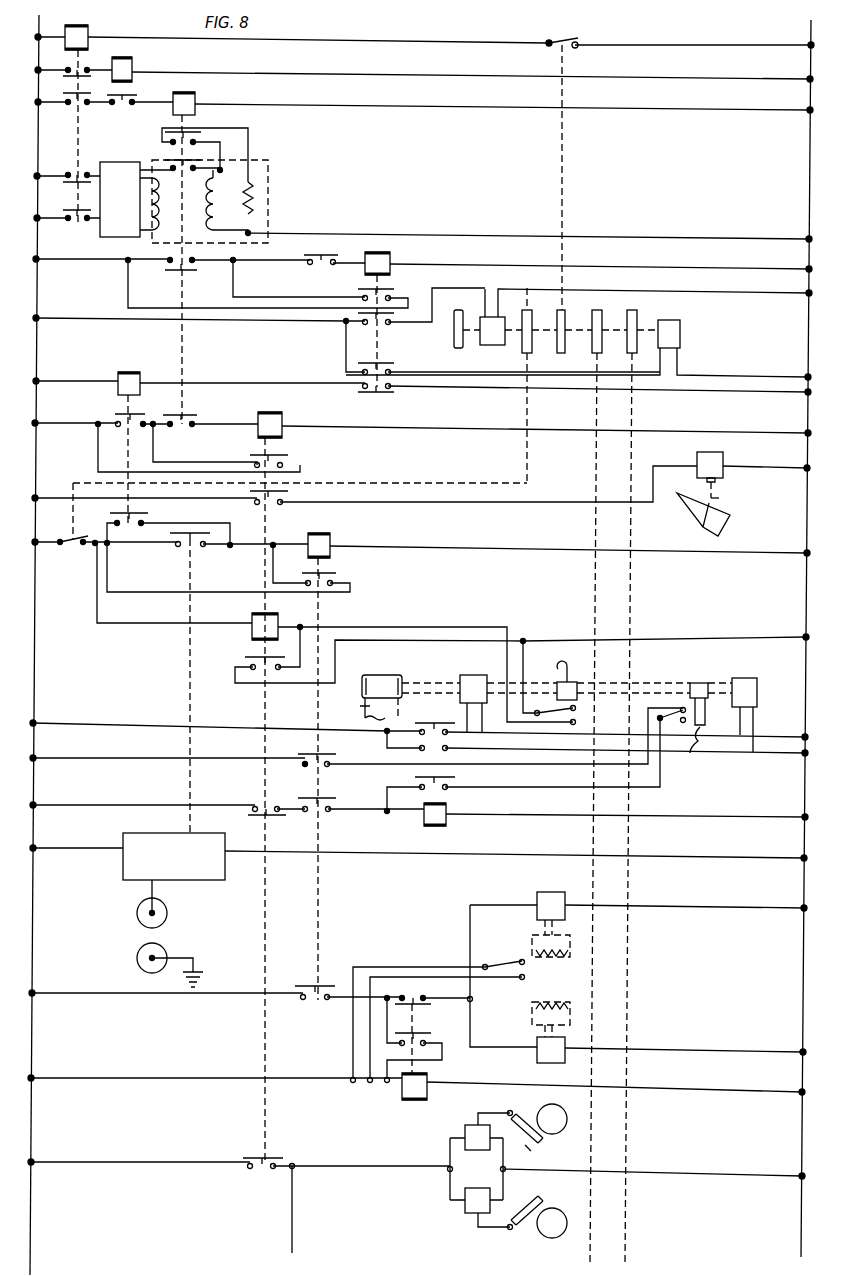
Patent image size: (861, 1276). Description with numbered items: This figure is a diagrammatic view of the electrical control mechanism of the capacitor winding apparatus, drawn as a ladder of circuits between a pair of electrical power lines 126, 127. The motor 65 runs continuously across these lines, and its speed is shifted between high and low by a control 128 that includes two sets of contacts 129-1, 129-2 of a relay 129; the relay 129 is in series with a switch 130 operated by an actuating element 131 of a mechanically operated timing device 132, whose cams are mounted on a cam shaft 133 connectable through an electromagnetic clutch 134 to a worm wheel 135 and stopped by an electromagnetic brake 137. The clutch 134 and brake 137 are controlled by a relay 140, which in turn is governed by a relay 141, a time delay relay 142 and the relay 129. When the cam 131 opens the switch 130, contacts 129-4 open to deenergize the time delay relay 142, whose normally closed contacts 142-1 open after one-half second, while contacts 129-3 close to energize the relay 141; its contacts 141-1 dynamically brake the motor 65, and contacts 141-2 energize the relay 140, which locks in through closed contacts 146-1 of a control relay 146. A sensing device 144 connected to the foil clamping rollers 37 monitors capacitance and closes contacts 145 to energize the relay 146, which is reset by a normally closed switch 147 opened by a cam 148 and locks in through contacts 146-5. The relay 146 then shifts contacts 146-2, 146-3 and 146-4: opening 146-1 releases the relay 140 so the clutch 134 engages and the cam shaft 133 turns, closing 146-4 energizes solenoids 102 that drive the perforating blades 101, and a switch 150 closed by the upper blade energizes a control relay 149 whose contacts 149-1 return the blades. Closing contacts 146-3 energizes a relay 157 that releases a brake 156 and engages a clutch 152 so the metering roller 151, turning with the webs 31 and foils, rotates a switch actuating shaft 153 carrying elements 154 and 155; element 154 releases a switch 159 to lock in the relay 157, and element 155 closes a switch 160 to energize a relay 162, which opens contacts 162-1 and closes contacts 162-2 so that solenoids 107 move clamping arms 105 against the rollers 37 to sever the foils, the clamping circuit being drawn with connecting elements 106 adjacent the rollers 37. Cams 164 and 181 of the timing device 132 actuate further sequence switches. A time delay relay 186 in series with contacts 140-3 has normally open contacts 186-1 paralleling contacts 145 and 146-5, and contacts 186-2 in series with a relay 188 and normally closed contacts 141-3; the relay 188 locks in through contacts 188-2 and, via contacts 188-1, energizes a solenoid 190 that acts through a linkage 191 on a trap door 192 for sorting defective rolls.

The electrical power line 126 is at (37, 30).
The electrical power line 127 is at (808, 30).
The relay 129 is at (88, 31).
The relay contacts 129-1 is at (76, 224).
The relay contacts 129-2 is at (79, 174).
The relay contacts 129-3 is at (84, 107).
The relay contacts 129-4 is at (83, 69).
The switch 130 is at (575, 40).
The time delay relay 142 is at (132, 62).
The normally closed contacts 142-1 is at (136, 100).
The relay 141 is at (196, 99).
The relay contacts 141-1 is at (195, 141).
The relay contacts 141-2 is at (170, 278).
The normally closed contacts 141-3 is at (196, 406).
The motor 65 is at (268, 202).
The speed control 128 is at (113, 238).
The relay contacts 146-1 is at (326, 248).
The relay 140 is at (390, 260).
The relay contacts 140-3 is at (378, 392).
The time delay relay 186 is at (152, 364).
The normally open contacts 186-1 is at (148, 514).
The relay contacts 186-2 is at (117, 414).
The relay 188 is at (290, 406).
The relay contacts 188-1 is at (264, 505).
The normally open contacts 188-2 is at (256, 460).
The solenoid 190 is at (697, 463).
The linkage 191 is at (719, 498).
The trap door 192 is at (695, 526).
The normally closed switch 147 is at (66, 548).
The relay contacts 145 is at (196, 548).
The control relay 146 is at (330, 542).
The relay contacts 146-2 is at (322, 758).
The relay contacts 146-3 is at (322, 803).
The relay contacts 146-4 is at (316, 987).
The relay contacts 146-5 is at (333, 584).
The relay 162 is at (255, 624).
The relay contacts 162-1 is at (260, 809).
The relay contacts 162-2 is at (267, 1160).
The metering roller 151 is at (378, 675).
The webs 31 is at (355, 708).
The electromagnetic clutch 152 is at (480, 675).
The switch actuating shaft 153 is at (644, 685).
The switch actuating element 154 is at (706, 685).
The switch actuating element 155 is at (554, 672).
The electromagnetic brake 156 is at (757, 690).
The relay 157 is at (446, 807).
The switch 159 is at (695, 752).
The switch 160 is at (557, 734).
The sensing device 144 is at (183, 880).
The foil clamping rollers 37 is at (165, 920).
The control relay 149 is at (402, 1093).
The relay contacts 149-1 is at (417, 994).
The switch 150 is at (534, 963).
The solenoids 102 is at (535, 896).
The perforating blades 101 is at (528, 940).
The solenoids 107 is at (465, 1138).
The terminal 106 is at (520, 1100).
The clamping arms 105 is at (535, 1148).
The electromagnetic clutch 134 is at (483, 317).
The worm wheel 135 is at (453, 337).
The cam 148 is at (531, 377).
The actuating element 131 is at (575, 199).
The cam 164 is at (613, 300).
The cam 181 is at (641, 777).
The timing device 132 is at (659, 304).
The electromagnetic brake 137 is at (680, 330).
The cam shaft 133 is at (552, 336).